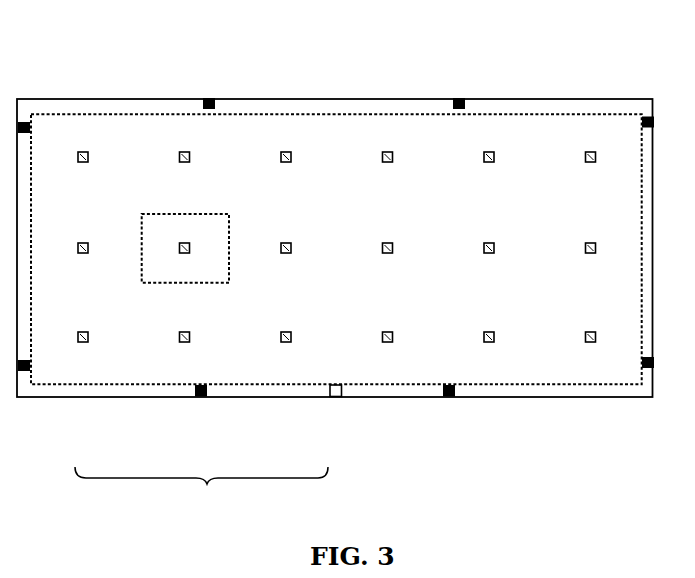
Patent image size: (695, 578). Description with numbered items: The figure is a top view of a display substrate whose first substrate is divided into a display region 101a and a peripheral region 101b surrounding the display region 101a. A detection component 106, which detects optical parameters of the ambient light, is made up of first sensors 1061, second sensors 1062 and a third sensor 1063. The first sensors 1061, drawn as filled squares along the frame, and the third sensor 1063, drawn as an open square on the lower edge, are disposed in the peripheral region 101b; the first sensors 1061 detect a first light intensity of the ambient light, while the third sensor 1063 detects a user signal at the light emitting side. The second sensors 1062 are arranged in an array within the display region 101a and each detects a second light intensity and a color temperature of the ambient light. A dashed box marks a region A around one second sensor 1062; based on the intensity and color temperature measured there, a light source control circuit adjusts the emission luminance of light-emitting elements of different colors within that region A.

The display region 101a is at (319, 113).
The peripheral region 101b is at (565, 98).
The region A is at (156, 212).
The detection component 106 is at (201, 491).
The first sensor 1061 is at (200, 399).
The second sensor 1062 is at (82, 345).
The third sensor 1063 is at (336, 399).